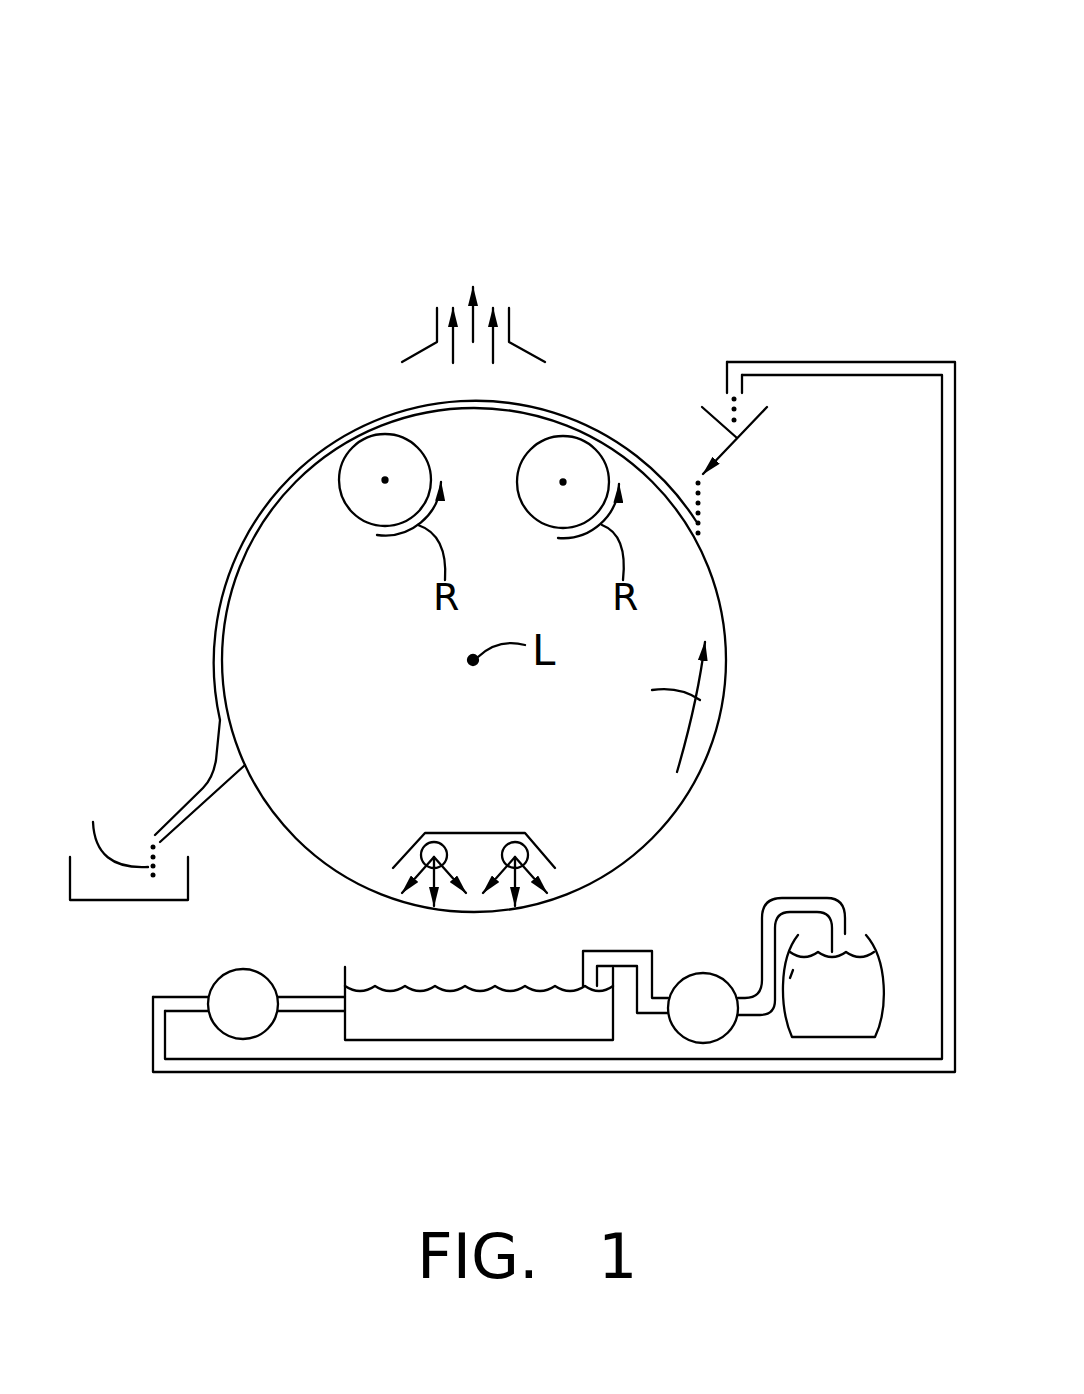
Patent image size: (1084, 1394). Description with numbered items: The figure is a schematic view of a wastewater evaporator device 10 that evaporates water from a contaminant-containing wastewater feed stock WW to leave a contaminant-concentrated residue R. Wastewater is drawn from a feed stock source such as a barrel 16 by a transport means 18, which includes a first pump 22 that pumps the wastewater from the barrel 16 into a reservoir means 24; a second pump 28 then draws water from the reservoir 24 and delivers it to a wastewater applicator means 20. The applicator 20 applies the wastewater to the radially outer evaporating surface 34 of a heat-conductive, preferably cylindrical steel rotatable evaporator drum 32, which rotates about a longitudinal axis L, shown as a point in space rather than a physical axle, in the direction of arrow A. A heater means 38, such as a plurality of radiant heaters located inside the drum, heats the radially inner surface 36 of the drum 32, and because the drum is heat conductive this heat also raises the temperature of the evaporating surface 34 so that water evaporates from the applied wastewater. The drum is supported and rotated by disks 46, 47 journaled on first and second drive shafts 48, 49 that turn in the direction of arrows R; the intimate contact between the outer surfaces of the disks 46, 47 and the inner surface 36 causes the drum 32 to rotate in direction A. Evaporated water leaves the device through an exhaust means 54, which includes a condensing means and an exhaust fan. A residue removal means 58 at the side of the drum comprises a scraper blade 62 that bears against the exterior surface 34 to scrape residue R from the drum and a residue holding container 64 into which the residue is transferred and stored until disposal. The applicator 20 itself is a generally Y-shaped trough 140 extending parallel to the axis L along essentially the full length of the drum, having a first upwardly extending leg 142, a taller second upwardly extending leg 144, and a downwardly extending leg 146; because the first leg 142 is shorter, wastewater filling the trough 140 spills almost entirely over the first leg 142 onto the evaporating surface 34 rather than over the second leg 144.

The wastewater evaporator device 10 is at (366, 150).
The barrel 16 is at (860, 906).
The transport means 18 is at (767, 886).
The wastewater applicator means 20 is at (771, 411).
The first pump 22 is at (680, 980).
The reservoir means 24 is at (418, 976).
The second pump 28 is at (232, 972).
The rotatable evaporator drum 32 is at (722, 778).
The radially outer evaporating surface 34 is at (718, 596).
The radially inner surface 36 is at (718, 728).
The heater means 38 is at (452, 818).
The disk 46 is at (430, 468).
The disk 47 is at (550, 524).
The first drive shaft 48 is at (387, 479).
The second drive shaft 49 is at (561, 481).
The exhaust means 54 is at (461, 323).
The residue removal means 58 is at (179, 769).
The scraper blade 62 is at (207, 816).
The residue holding container 64 is at (150, 903).
The Y-shaped trough 140 is at (745, 444).
The first upwardly extending leg 142 is at (722, 427).
The second upwardly extending leg 144 is at (757, 418).
The downwardly extending leg 146 is at (705, 480).